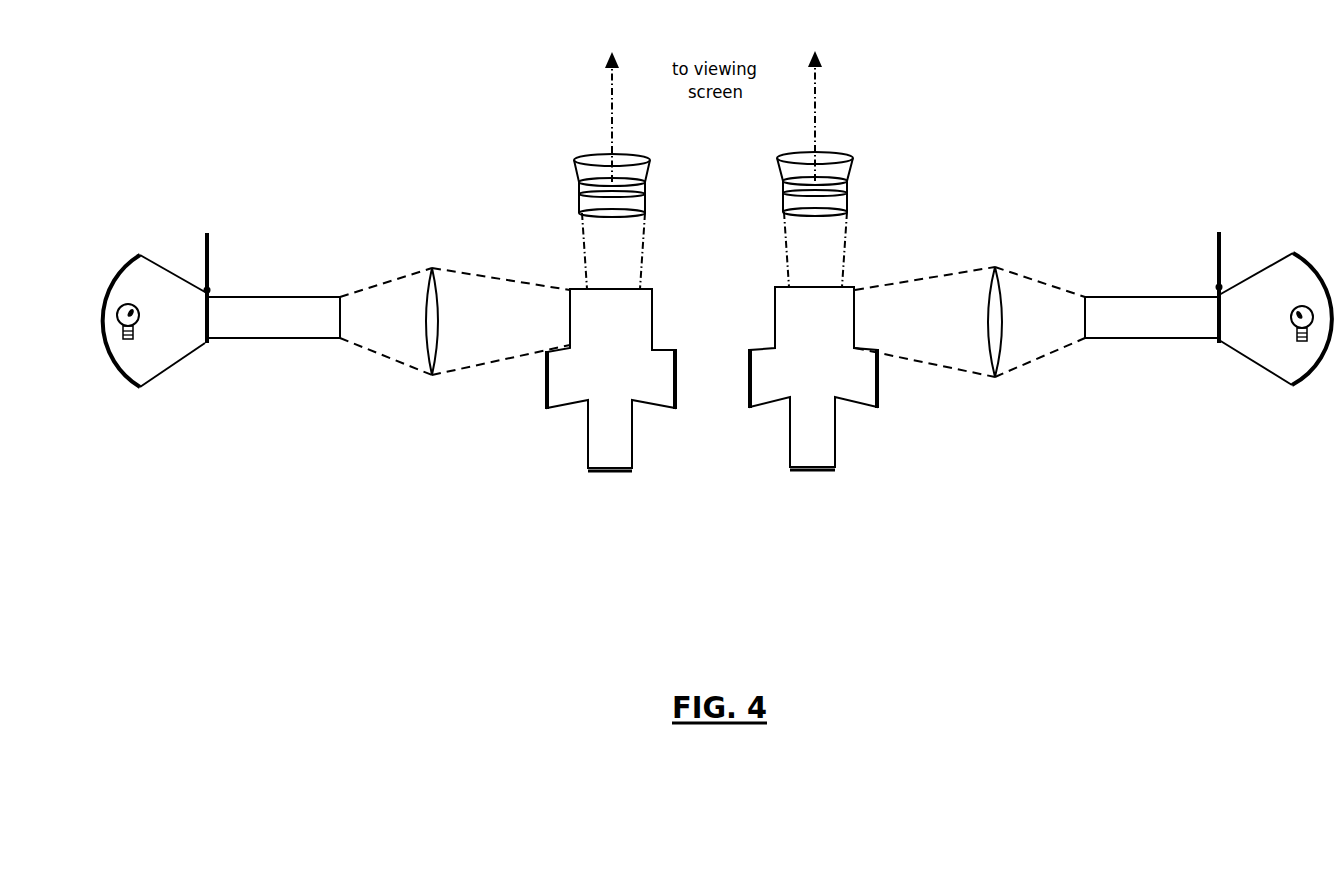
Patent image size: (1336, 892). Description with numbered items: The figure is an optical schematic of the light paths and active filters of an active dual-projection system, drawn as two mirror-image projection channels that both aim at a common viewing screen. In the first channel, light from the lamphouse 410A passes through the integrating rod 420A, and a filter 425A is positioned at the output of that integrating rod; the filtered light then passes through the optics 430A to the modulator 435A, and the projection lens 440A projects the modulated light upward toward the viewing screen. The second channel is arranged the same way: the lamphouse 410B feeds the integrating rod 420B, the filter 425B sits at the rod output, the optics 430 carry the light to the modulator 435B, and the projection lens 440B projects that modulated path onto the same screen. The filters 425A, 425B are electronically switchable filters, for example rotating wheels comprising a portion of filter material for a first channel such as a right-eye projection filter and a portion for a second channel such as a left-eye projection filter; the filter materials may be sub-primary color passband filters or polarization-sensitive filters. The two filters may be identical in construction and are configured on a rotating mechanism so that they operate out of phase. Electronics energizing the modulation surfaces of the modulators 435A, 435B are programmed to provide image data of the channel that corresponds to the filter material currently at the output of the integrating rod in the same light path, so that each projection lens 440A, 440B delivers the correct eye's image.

The lamphouse 410A is at (126, 247).
The filter 425A is at (212, 247).
The integrating rod 420A is at (330, 288).
The optics 430A is at (455, 295).
The modulator 435A is at (653, 322).
The projection lens 440A is at (560, 170).
The projection lens 440B is at (868, 169).
The modulator 435B is at (773, 320).
The optics 430 is at (970, 300).
The integrating rod 420B is at (1095, 286).
The filter 425B is at (1213, 240).
The lamphouse 410B is at (1319, 244).